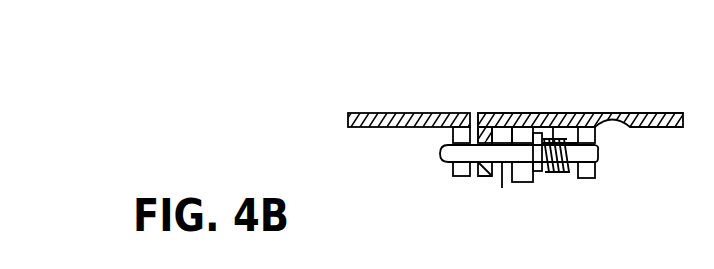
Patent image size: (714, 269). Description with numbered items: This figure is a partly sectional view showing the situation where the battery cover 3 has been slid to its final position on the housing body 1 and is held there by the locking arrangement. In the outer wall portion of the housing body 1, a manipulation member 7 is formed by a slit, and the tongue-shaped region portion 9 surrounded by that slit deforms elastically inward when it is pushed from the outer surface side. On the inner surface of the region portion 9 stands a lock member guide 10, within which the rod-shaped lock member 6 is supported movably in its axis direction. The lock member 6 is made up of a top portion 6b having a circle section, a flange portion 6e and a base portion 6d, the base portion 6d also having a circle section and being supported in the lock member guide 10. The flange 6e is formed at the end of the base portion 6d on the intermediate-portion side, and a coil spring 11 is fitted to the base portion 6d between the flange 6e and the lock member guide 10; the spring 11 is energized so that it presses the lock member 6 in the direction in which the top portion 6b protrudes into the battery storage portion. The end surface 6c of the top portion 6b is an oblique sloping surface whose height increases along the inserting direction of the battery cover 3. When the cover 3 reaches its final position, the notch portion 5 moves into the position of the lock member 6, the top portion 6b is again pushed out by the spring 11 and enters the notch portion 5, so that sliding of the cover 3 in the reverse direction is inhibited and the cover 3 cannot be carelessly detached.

The housing body 1 is at (650, 112).
The battery cover 3 is at (425, 124).
The notch portion 5 is at (453, 136).
The lock member 6 is at (572, 180).
The top portion 6b is at (502, 166).
The end surface 6c is at (447, 157).
The base portion 6d is at (587, 158).
The flange portion 6e is at (537, 173).
The manipulation member 7 is at (597, 75).
The region portion 9 is at (497, 112).
The lock member guide 10 is at (592, 178).
The coil spring 11 is at (552, 125).